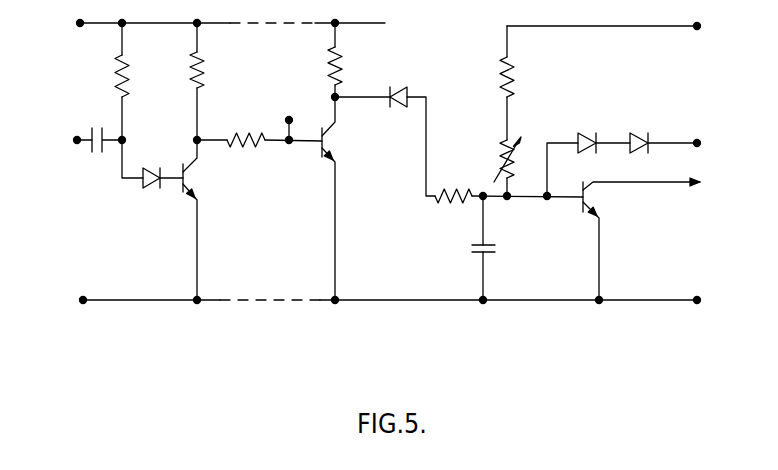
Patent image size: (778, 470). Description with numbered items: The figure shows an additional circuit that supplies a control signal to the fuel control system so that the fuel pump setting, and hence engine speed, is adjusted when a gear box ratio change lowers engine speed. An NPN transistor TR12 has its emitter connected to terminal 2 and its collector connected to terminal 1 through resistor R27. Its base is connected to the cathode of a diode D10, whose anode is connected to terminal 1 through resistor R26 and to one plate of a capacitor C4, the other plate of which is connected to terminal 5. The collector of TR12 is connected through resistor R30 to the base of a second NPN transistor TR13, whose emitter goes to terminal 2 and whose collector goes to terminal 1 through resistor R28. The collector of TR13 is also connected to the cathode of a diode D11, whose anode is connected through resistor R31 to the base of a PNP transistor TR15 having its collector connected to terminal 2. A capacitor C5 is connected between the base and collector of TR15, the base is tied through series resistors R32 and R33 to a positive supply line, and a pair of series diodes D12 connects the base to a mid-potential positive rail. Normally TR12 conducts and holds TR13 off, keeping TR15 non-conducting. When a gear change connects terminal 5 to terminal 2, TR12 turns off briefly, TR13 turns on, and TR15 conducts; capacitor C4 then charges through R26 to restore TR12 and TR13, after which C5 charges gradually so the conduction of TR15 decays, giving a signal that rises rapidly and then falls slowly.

The terminal 1 is at (378, 23).
The terminal 2 is at (379, 300).
The terminal 5 is at (73, 140).
The capacitor C4 is at (101, 153).
The capacitor C5 is at (485, 253).
The resistor R26 is at (131, 80).
The resistor R27 is at (205, 72).
The resistor R28 is at (343, 75).
The resistor R30 is at (235, 136).
The resistor R31 is at (462, 206).
The resistor R32 is at (500, 160).
The resistor R33 is at (514, 80).
The diode D10 is at (145, 182).
The diode D11 is at (408, 94).
The pair of diodes D12 is at (632, 142).
The NPN transistor TR12 is at (194, 176).
The NPN transistor TR13 is at (333, 148).
The PNP transistor TR15 is at (596, 204).